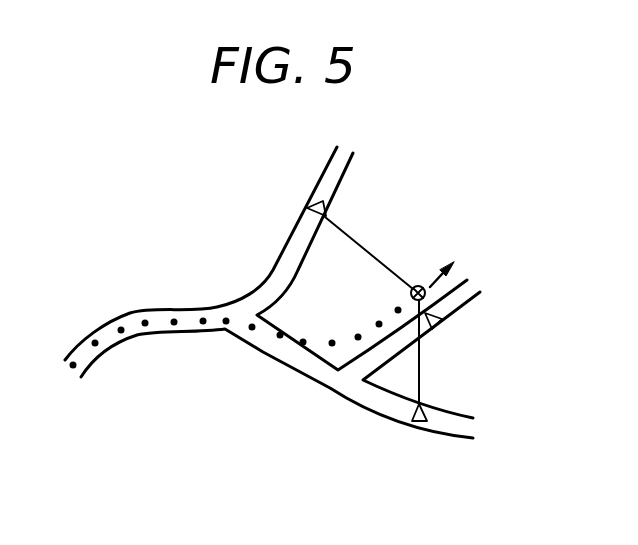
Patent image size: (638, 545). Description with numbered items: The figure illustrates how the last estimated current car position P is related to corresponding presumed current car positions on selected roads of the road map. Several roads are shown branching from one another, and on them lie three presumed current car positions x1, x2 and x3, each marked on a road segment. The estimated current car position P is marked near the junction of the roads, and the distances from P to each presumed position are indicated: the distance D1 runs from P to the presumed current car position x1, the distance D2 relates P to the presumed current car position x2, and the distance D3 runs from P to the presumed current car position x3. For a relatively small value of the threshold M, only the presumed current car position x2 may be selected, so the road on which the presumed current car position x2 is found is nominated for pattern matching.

The estimated current car position P is at (419, 286).
The distance D1 is at (369, 250).
The distance D2 is at (463, 266).
The distance D3 is at (442, 351).
The presumed current car position x1 is at (307, 207).
The presumed current car position x2 is at (442, 321).
The presumed current car position x3 is at (419, 423).